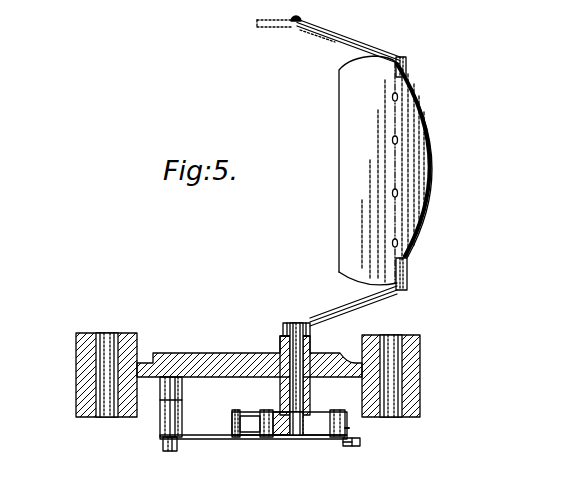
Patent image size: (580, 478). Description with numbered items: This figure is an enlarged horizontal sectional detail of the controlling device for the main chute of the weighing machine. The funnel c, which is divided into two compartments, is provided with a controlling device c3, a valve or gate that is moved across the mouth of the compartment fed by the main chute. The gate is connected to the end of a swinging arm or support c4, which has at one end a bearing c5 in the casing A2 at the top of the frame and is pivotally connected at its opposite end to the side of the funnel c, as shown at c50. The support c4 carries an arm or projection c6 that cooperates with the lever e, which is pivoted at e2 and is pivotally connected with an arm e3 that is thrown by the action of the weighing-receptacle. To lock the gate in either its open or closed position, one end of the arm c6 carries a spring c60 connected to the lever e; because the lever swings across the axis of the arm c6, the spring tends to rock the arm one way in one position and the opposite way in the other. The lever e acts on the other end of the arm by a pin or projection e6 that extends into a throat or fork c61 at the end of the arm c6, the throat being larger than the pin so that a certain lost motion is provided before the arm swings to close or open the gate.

The funnel c is at (275, 24).
The pivotal connection c50 is at (300, 33).
The controlling device c3 is at (431, 165).
The swinging arm or support c4 is at (391, 292).
The bearing c5 is at (291, 342).
The casing A2 is at (329, 353).
The arm or projection c6 is at (316, 415).
The pin or projection e6 is at (344, 414).
The spring c60 is at (254, 436).
The throat or fork c61 is at (349, 428).
The lever e is at (217, 439).
The pivot of lever e2 is at (175, 448).
The arm or rod e3 is at (350, 444).